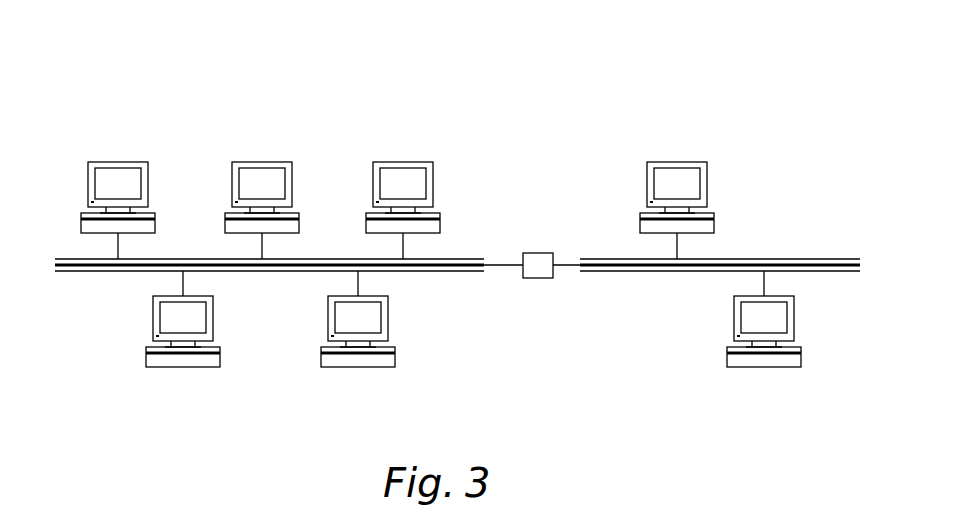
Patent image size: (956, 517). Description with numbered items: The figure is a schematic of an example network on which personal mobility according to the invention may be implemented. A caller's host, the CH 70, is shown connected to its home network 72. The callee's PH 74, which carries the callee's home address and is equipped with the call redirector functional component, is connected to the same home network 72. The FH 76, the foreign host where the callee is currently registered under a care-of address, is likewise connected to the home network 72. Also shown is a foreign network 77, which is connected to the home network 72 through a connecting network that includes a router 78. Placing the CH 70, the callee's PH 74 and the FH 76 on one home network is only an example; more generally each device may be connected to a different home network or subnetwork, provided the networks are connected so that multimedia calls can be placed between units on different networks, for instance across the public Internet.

The CH 70 is at (102, 122).
The home network 72 is at (107, 296).
The callee's PH 74 is at (212, 312).
The FH 76 is at (388, 42).
The foreign network 77 is at (803, 232).
The router 78 is at (530, 253).